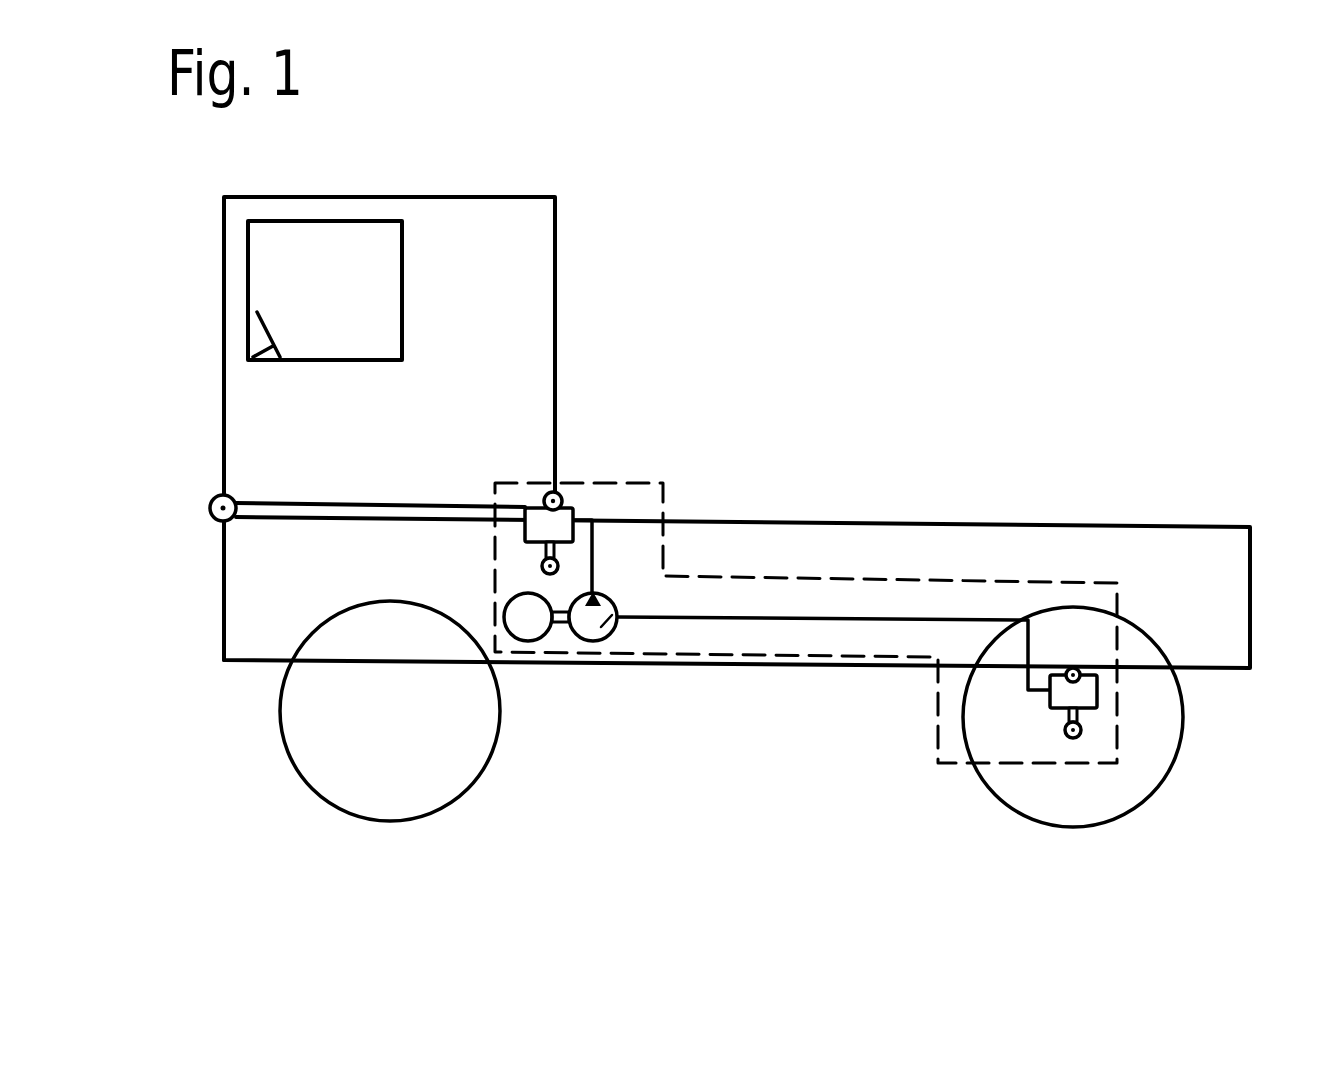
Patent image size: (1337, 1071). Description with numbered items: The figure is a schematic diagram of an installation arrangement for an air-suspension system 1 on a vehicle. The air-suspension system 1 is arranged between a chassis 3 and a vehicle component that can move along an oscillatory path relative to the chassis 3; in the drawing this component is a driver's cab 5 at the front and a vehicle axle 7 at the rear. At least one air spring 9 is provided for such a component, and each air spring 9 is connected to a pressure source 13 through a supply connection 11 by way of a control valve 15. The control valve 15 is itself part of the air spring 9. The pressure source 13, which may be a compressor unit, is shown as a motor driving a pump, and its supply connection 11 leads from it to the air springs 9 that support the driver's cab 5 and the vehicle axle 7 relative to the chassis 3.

The air-suspension system 1 is at (752, 578).
The chassis 3 is at (1225, 606).
The driver's cab 5 is at (522, 257).
The vehicle axle 7 is at (1083, 737).
The air spring 9 is at (557, 520).
The supply connection 11 is at (577, 520).
The pressure source 13 is at (618, 608).
The control valve 15 is at (566, 548).